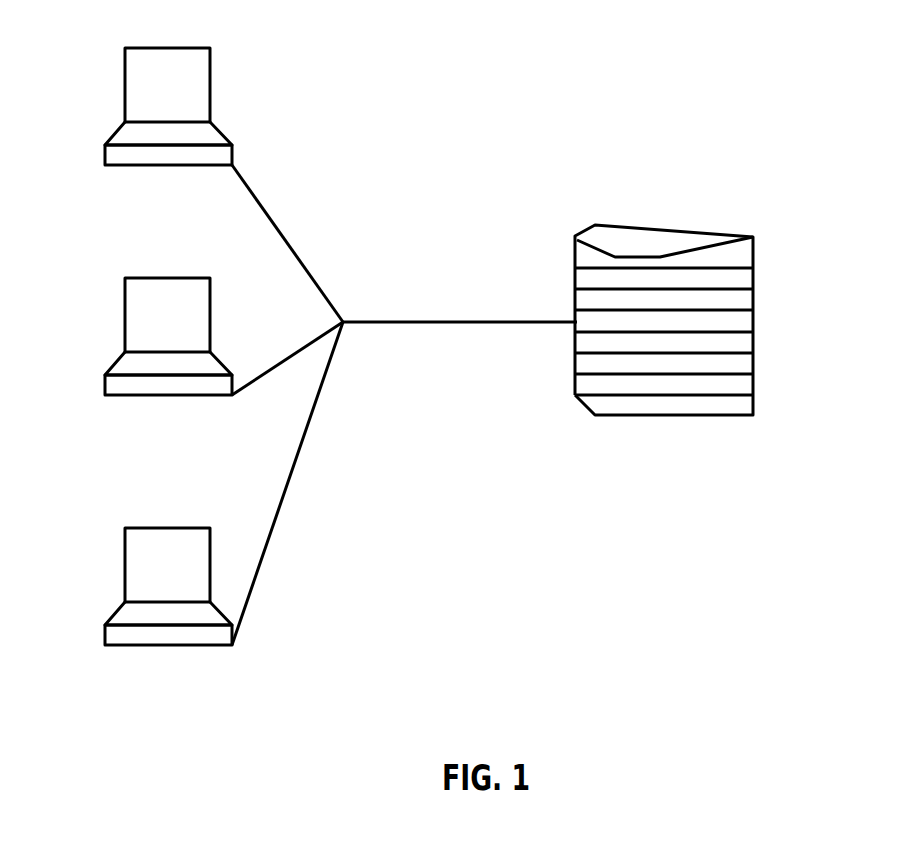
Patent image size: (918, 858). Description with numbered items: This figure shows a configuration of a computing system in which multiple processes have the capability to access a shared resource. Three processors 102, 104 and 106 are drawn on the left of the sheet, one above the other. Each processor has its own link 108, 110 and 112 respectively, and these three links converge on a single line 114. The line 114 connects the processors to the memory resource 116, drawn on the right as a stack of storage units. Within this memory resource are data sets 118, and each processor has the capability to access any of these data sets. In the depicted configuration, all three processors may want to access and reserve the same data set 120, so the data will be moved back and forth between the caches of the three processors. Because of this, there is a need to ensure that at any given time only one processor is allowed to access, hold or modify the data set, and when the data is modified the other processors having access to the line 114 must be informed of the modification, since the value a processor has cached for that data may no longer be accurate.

The processor 102 is at (125, 72).
The processor 104 is at (125, 312).
The processor 106 is at (125, 552).
The link 108 is at (272, 215).
The link 110 is at (262, 377).
The link 112 is at (262, 571).
The line 114 is at (430, 322).
The memory resource 116 is at (642, 364).
The data sets 118 is at (695, 331).
The data set 120 is at (587, 321).